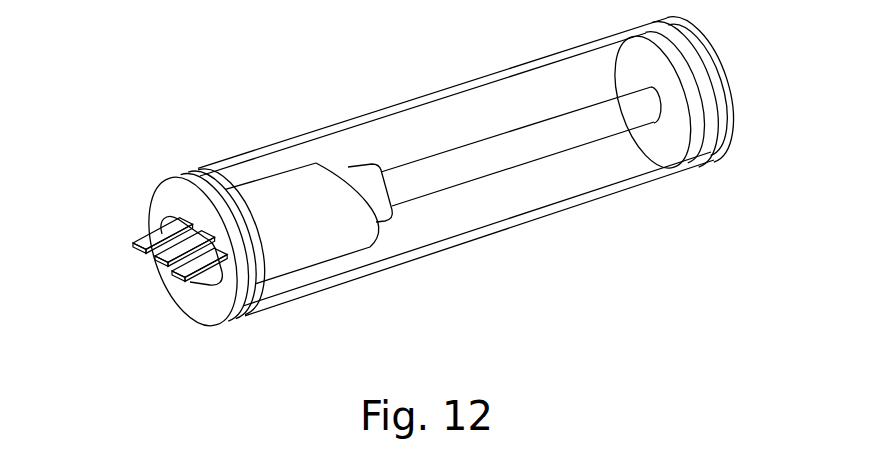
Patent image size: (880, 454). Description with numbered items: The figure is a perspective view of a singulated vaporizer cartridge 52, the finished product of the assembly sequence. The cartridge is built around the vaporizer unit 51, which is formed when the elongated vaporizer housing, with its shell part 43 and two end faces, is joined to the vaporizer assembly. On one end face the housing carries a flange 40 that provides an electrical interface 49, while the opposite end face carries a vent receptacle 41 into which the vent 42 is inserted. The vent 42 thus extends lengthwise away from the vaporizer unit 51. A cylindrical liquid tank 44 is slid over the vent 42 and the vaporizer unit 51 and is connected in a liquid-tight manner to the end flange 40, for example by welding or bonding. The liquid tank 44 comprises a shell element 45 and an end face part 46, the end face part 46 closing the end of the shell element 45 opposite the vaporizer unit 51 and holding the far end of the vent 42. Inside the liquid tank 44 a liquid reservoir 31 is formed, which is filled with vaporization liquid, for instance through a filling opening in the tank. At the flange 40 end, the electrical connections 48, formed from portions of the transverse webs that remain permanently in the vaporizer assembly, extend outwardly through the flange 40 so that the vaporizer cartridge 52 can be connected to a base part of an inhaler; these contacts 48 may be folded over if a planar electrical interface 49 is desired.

The liquid reservoir 31 is at (394, 128).
The flange 40 is at (202, 311).
The vent receptacle 41 is at (353, 167).
The vent 42 is at (468, 138).
The shell part 43 is at (268, 176).
The liquid tank 44 is at (460, 243).
The shell element 45 is at (471, 172).
The end face part 46 is at (705, 43).
The electrical connections 48 is at (141, 244).
The electrical interface 49 is at (131, 292).
The vaporizer unit 51 is at (307, 271).
The vaporizer cartridge 52 is at (413, 264).